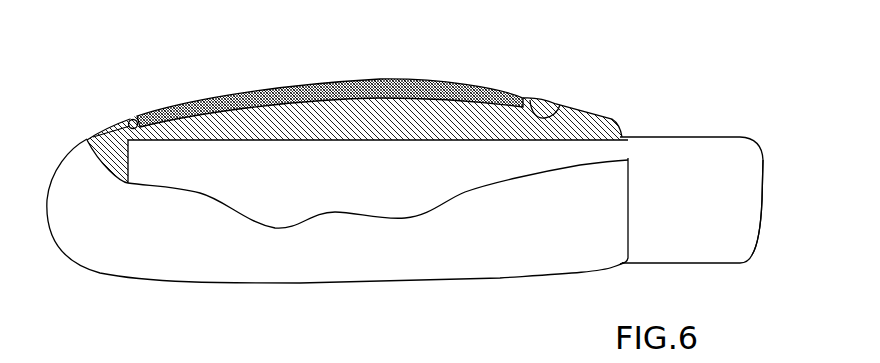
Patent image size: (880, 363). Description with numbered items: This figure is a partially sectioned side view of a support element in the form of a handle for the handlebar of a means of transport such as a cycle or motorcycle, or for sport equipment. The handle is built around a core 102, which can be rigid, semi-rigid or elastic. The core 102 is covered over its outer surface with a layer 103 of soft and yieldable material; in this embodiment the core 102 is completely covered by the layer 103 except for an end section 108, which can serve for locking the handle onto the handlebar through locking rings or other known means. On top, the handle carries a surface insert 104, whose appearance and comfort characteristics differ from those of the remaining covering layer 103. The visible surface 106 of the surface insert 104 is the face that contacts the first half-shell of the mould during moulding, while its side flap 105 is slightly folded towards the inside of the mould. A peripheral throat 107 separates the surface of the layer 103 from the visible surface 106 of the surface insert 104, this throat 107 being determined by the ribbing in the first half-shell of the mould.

The core 102 is at (690, 136).
The layer 103 is at (418, 258).
The surface insert 104 is at (362, 85).
The side flap 105 is at (92, 138).
The visible surface 106 is at (273, 84).
The peripheral throat 107 is at (130, 118).
The end section 108 is at (750, 172).